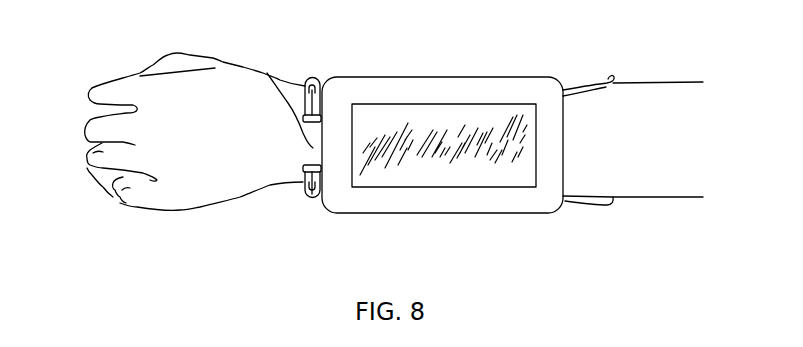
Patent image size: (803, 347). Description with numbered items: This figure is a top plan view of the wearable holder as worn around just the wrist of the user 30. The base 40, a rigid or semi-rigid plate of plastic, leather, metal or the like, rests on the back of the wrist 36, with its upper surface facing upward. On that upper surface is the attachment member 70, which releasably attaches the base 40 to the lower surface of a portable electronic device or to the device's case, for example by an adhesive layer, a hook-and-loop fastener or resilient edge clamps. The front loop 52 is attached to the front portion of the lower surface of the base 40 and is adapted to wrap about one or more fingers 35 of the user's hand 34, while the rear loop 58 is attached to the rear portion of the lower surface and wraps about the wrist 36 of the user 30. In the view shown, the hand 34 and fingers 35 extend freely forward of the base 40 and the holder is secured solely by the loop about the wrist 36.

The user 30 is at (643, 108).
The user's hand 34 is at (213, 155).
The fingers 35 is at (113, 87).
The wrist 36 is at (267, 73).
The base 40 is at (377, 87).
The front loop 52 is at (310, 80).
The rear loop 58 is at (603, 84).
The attachment member 70 is at (427, 112).